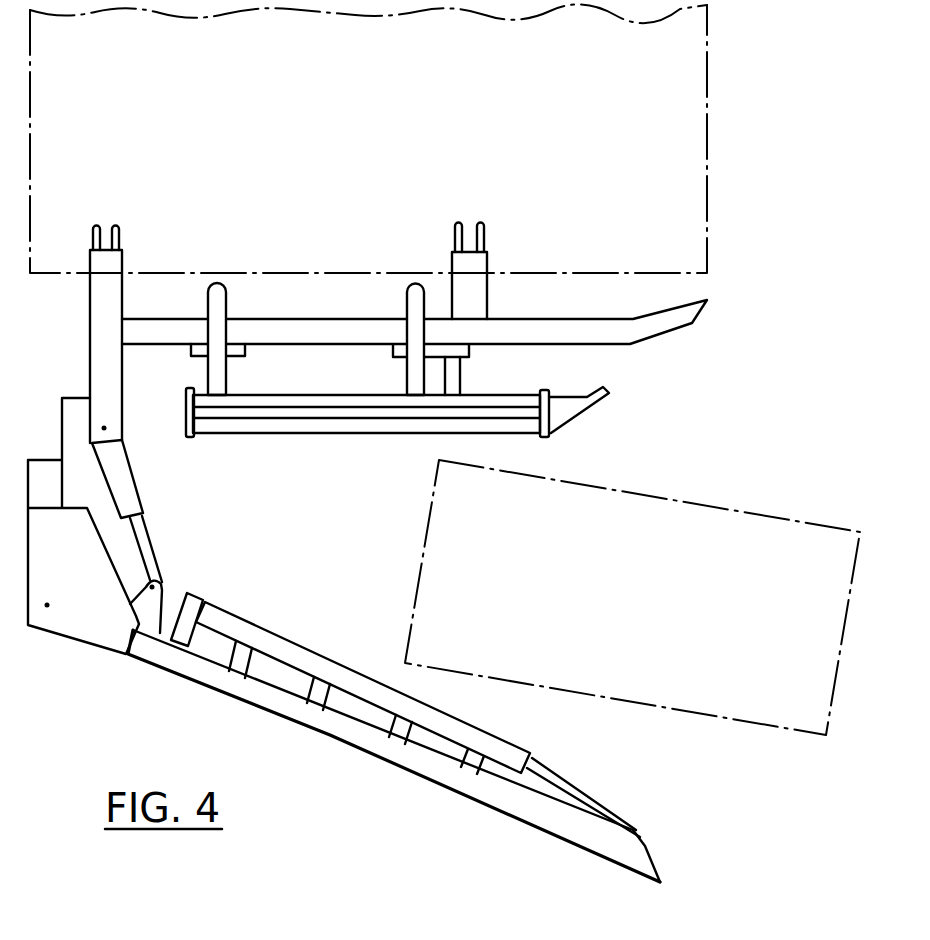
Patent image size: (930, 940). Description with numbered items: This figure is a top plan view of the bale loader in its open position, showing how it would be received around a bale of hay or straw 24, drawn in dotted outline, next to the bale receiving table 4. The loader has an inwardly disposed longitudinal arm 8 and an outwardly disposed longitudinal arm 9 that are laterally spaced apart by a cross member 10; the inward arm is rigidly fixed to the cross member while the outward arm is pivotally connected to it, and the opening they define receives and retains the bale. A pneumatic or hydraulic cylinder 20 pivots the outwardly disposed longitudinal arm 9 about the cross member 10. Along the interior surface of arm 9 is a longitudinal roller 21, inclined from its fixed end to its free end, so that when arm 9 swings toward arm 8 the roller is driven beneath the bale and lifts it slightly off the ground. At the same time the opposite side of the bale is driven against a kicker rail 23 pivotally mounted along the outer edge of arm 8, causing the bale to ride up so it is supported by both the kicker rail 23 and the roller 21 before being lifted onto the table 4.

The bale receiving table 4 is at (375, 147).
The inwardly disposed longitudinal arm 8 is at (612, 332).
The outwardly disposed longitudinal arm 9 is at (370, 738).
The cross member 10 is at (101, 365).
The pneumatic or hydraulic cylinder 20 is at (120, 468).
The longitudinal roller 21 is at (432, 708).
The kicker rail 23 is at (401, 428).
The bale of hay or straw 24 is at (643, 618).